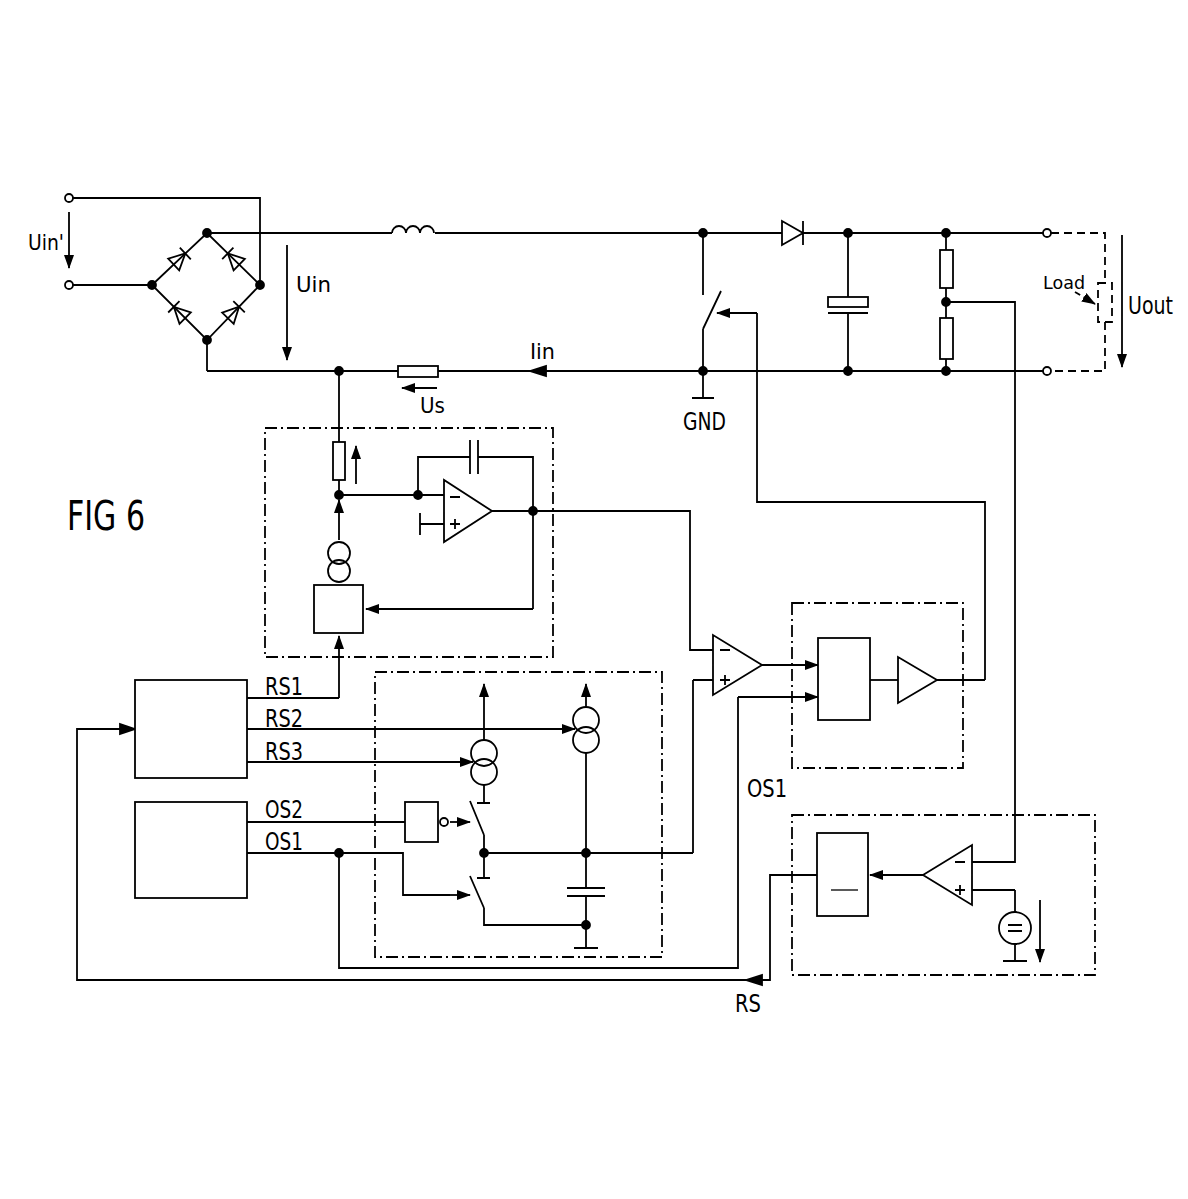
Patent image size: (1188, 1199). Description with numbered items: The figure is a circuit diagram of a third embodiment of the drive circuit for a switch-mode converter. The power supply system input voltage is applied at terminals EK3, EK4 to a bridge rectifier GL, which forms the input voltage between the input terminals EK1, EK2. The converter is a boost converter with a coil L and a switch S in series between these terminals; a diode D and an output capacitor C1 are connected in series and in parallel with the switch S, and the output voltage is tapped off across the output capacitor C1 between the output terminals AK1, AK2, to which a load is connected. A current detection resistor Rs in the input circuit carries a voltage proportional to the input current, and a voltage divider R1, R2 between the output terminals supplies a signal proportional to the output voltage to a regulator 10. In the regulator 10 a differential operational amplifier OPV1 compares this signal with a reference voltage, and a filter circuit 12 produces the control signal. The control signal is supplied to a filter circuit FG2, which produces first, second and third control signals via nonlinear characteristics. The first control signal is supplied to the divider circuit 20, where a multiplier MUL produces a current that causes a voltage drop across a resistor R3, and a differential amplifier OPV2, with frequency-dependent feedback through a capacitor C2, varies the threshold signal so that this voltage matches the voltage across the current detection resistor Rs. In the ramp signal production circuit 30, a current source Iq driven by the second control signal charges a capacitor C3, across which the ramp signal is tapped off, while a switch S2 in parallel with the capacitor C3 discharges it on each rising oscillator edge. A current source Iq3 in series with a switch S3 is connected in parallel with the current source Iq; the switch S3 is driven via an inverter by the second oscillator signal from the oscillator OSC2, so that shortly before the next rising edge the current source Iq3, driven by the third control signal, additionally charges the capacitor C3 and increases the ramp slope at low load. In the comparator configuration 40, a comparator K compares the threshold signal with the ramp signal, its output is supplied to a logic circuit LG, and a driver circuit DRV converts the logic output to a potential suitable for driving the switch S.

The regulator 10 is at (1095, 882).
The filter circuit 12 is at (840, 916).
The divider circuit 20 is at (430, 534).
The ramp signal production circuit 30 is at (663, 893).
The comparator configuration 40 is at (862, 603).
The bridge rectifier GL is at (118, 347).
The input terminal EK1 is at (206, 221).
The input terminal EK2 is at (187, 353).
The input terminal EK3 is at (139, 238).
The input terminal EK4 is at (101, 303).
The coil L is at (413, 240).
The current detection resistor Rs is at (418, 364).
The switch S is at (698, 318).
The diode D is at (792, 250).
The output capacitor C1 is at (872, 316).
The voltage divider resistor R1 is at (953, 268).
The voltage divider resistor R2 is at (953, 338).
The output terminal AK1 is at (1051, 219).
The output terminal AK2 is at (1051, 388).
The resistor R3 is at (331, 466).
The capacitor C2 is at (481, 462).
The differential amplifier OPV2 is at (474, 534).
The multiplier MUL is at (250, 643).
The comparator K is at (739, 648).
The logic circuit LG is at (810, 652).
The driver circuit DRV is at (926, 668).
The differential operational amplifier OPV1 is at (942, 892).
The filter circuit FG2 is at (135, 690).
The oscillator OSC2 is at (191, 874).
The current source Iq is at (600, 745).
The current source Iq3 is at (498, 770).
The switch S2 is at (490, 894).
The switch S3 is at (490, 820).
The capacitor C3 is at (607, 895).